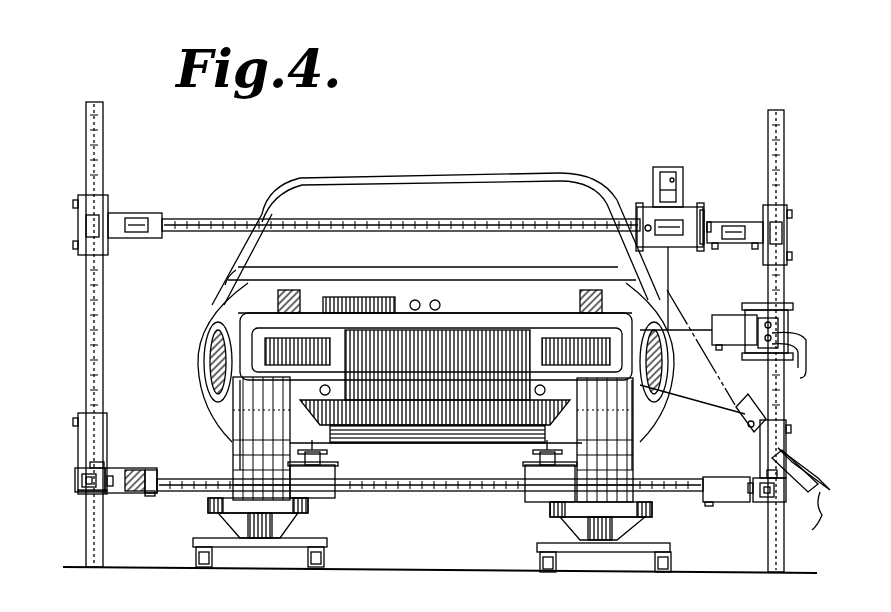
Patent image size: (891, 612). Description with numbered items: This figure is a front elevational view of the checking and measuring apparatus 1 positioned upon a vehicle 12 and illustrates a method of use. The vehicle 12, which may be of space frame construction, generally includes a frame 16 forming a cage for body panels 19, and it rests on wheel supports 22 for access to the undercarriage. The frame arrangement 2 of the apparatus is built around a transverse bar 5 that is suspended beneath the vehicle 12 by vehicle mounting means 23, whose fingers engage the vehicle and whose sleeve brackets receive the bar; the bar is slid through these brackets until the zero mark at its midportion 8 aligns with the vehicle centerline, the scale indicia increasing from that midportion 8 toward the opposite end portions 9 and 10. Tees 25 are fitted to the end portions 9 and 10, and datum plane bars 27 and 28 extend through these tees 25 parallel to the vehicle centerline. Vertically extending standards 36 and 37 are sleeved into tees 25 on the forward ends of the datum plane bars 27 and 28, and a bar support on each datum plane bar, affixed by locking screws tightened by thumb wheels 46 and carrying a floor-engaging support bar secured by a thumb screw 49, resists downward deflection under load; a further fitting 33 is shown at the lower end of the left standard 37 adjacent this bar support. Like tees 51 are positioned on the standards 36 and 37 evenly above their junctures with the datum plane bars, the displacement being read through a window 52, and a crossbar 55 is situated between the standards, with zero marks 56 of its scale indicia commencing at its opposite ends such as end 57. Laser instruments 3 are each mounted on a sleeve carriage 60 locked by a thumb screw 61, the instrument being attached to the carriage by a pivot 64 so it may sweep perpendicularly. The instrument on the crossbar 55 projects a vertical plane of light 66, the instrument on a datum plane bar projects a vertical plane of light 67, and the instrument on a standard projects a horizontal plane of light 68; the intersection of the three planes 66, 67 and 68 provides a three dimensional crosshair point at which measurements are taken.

The checking and measuring apparatus 1 is at (815, 405).
The frame arrangement 2 is at (658, 502).
The laser instrument 3 is at (676, 170).
The transverse bar 5 is at (472, 492).
The midportion 8 is at (412, 492).
The end portion 9 is at (170, 493).
The end portion 10 is at (712, 503).
The vehicle 12 is at (505, 178).
The frame 16 is at (450, 268).
The body panels 19 is at (226, 290).
The wheel supports 22 is at (328, 546).
The vehicle mounting means 23 is at (336, 472).
The tee 25 is at (158, 470).
The datum plane bar 27 is at (773, 503).
The datum plane bar 28 is at (88, 494).
The lock block 33 is at (82, 485).
The standard 36 is at (785, 302).
The standard 37 is at (86, 320).
The thumb wheels 46 is at (90, 466).
The thumb screw 49 is at (114, 468).
The tee 51 is at (78, 223).
The window 52 is at (790, 236).
The crossbar 55 is at (234, 214).
The zero marks 56 is at (174, 215).
The end 57 is at (716, 226).
The sleeve carriage 60 is at (640, 212).
The thumb screw 61 is at (642, 250).
The pivot 64 is at (706, 214).
The plane of light 66 is at (672, 286).
The plane of light 67 is at (703, 398).
The plane of light 68 is at (712, 322).